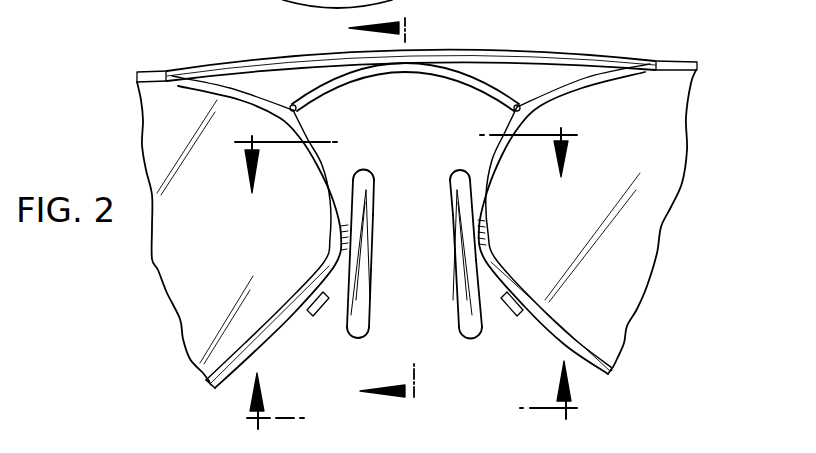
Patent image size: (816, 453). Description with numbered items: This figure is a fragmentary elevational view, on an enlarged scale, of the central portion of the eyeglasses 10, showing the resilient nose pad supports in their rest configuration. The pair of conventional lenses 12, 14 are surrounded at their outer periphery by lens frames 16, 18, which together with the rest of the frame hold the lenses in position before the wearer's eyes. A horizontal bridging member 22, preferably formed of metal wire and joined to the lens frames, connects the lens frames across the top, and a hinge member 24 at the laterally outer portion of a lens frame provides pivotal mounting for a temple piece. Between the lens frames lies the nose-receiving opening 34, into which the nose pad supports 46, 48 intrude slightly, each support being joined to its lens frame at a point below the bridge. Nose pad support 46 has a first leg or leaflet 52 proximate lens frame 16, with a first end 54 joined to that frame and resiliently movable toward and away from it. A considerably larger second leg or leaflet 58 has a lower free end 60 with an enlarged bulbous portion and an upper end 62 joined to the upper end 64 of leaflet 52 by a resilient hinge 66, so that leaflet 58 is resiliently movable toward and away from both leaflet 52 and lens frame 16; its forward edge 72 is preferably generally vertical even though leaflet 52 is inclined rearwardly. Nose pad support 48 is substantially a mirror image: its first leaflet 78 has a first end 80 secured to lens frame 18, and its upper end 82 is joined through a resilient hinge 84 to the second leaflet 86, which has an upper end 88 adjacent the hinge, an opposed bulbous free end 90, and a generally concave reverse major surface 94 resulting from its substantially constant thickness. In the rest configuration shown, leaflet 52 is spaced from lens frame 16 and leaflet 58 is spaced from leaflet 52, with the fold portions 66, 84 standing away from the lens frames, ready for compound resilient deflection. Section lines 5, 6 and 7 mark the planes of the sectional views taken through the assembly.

The eyeglasses 10 is at (417, 228).
The lens 12 is at (172, 259).
The lens 14 is at (661, 250).
The lens frame 16 is at (210, 388).
The lens frame 18 is at (612, 365).
The horizontal bridging member 22 is at (424, 74).
The hinge member 24 is at (557, 53).
The nose-receiving opening 34 is at (470, 97).
The nose pad support 46 is at (361, 230).
The nose pad support 48 is at (471, 244).
The first leg or leaflet 52 is at (336, 233).
The first end 54 is at (326, 266).
The second leg or leaflet 58 is at (404, 262).
The lower free end 60 is at (373, 318).
The upper end 62 is at (375, 197).
The upper end 64 is at (352, 188).
The resilient hinge 66 is at (365, 176).
The forward edge 72 is at (373, 239).
The first leg or leaflet 78 is at (493, 223).
The first end 80 is at (514, 297).
The upper end 82 is at (466, 202).
The resilient hinge 84 is at (455, 176).
The second leaflet 86 is at (446, 265).
The upper end 88 is at (450, 202).
The free end 90 is at (472, 330).
The reverse major surface 94 is at (476, 298).
The section line 5- 5 is at (392, 213).
The section line 6- 6 is at (412, 405).
The section line 7- 7 is at (406, 147).